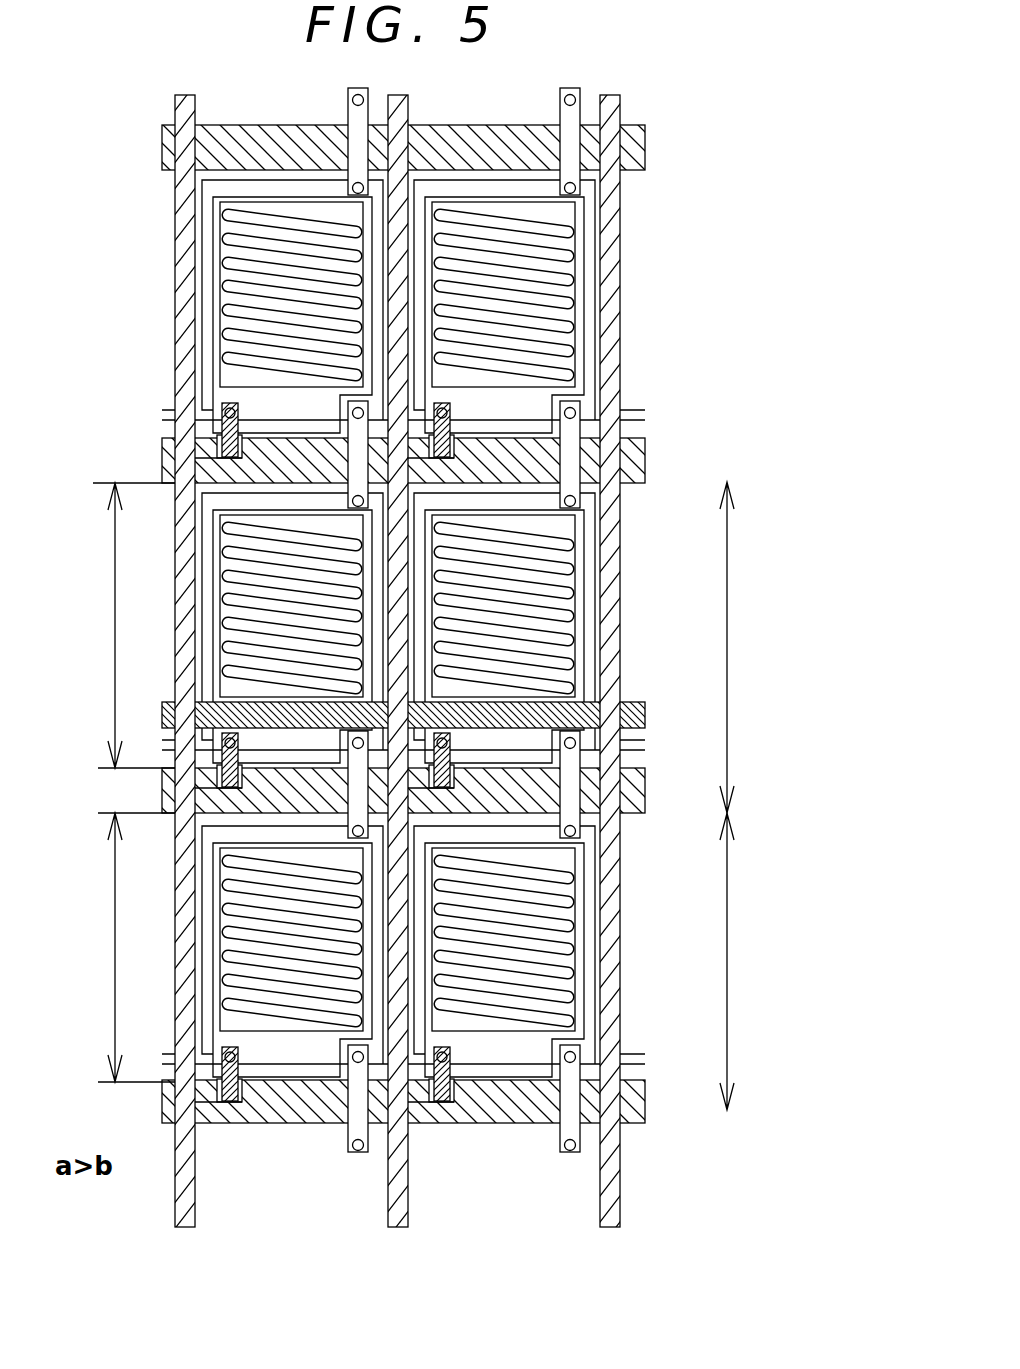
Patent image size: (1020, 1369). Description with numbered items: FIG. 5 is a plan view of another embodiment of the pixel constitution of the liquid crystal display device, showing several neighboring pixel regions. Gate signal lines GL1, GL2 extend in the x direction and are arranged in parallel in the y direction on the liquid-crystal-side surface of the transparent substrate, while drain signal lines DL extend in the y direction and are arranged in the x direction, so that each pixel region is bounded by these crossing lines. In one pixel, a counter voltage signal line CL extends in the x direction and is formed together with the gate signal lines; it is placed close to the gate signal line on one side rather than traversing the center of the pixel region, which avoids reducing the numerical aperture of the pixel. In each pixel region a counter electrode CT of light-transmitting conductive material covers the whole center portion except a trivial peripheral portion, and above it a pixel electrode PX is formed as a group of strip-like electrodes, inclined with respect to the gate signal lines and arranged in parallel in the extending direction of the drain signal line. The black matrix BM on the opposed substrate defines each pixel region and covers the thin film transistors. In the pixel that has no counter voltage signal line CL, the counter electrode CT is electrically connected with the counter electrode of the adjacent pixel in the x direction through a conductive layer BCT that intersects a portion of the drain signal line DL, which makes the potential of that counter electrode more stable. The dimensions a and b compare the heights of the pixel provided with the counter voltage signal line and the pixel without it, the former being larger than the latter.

The gate signal line GL1 is at (640, 152).
The gate signal line GL2 is at (640, 462).
The drain signal line DL is at (398, 680).
The counter voltage signal line CL is at (648, 713).
The counter electrode CT is at (590, 508).
The pixel electrode PX is at (585, 556).
The black matrix BM is at (575, 602).
The conductive layer BCT is at (413, 1088).
The pixel pitch a is at (104, 625).
The pixel pitch b is at (104, 947).